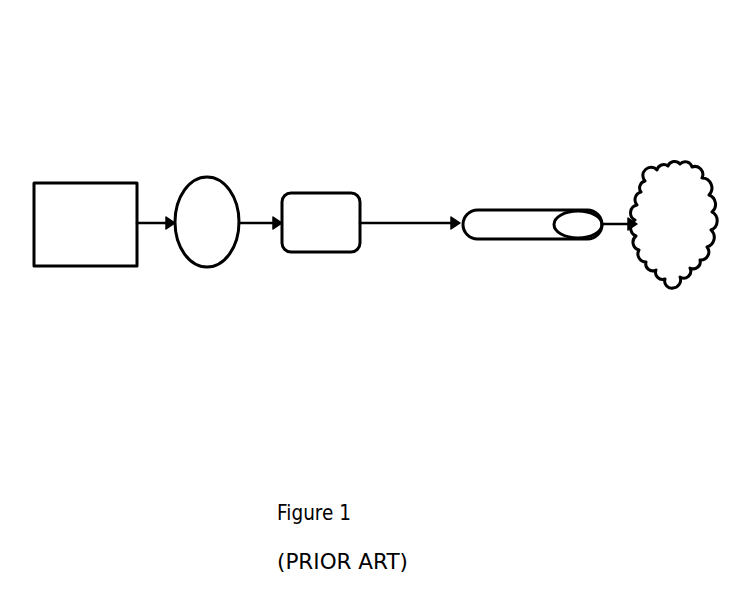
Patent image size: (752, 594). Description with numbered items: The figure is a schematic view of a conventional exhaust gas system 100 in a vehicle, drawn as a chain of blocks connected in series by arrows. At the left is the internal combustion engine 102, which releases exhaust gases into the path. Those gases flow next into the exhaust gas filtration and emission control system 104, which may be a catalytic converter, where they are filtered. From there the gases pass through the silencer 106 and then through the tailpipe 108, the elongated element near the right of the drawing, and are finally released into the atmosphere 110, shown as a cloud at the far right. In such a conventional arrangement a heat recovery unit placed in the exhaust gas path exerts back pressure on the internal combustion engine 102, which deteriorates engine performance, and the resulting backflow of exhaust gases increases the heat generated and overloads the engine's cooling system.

The conventional exhaust gas system 100 is at (517, 76).
The internal combustion engine 102 is at (83, 266).
The exhaust gas filtration and emission control system 104 is at (204, 267).
The silencer 106 is at (317, 252).
The tailpipe 108 is at (514, 239).
The atmosphere 110 is at (673, 288).